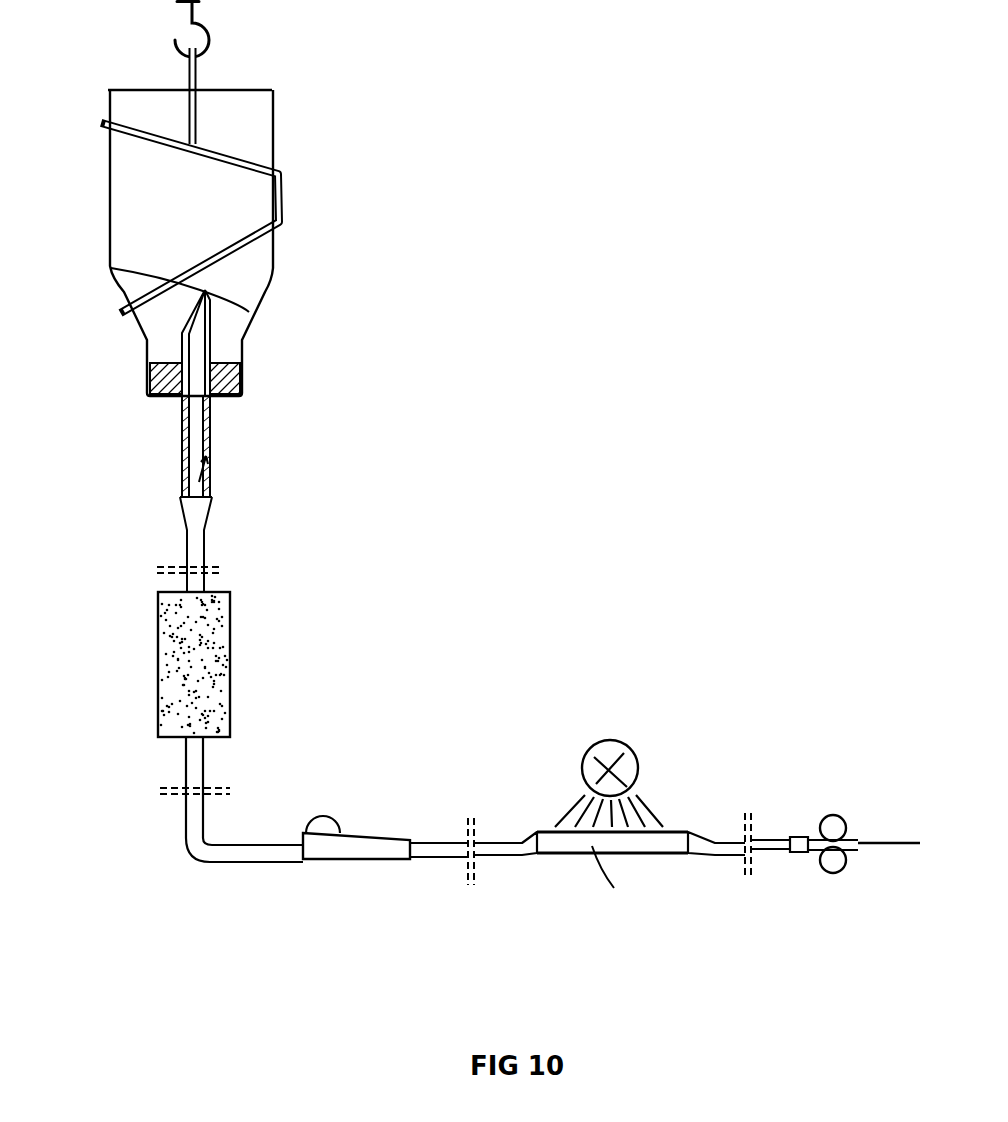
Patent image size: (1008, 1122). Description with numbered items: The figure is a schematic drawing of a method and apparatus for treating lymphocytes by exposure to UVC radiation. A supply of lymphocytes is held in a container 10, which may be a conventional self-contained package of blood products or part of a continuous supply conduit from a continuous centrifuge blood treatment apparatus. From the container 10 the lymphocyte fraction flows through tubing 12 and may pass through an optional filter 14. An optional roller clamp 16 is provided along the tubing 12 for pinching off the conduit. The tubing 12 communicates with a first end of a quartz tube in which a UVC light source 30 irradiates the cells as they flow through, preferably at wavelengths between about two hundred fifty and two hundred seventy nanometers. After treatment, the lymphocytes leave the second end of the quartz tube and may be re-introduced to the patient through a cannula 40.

The container 10 is at (272, 88).
The tubing 12 is at (178, 478).
The filter 14 is at (158, 636).
The roller clamp 16 is at (363, 850).
The UVC light source 30 is at (623, 742).
The cannula 40 is at (858, 846).